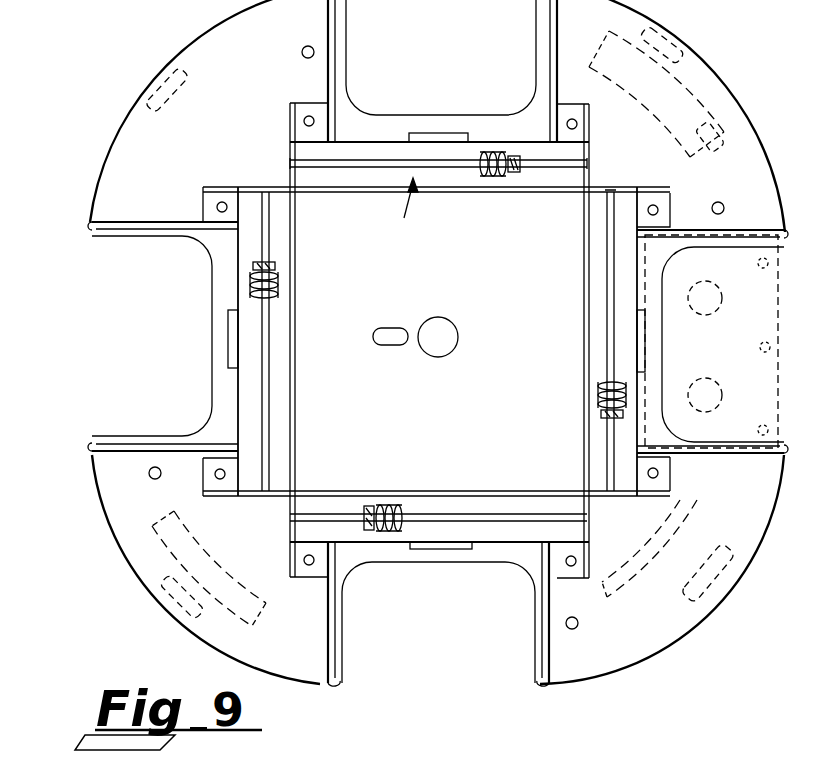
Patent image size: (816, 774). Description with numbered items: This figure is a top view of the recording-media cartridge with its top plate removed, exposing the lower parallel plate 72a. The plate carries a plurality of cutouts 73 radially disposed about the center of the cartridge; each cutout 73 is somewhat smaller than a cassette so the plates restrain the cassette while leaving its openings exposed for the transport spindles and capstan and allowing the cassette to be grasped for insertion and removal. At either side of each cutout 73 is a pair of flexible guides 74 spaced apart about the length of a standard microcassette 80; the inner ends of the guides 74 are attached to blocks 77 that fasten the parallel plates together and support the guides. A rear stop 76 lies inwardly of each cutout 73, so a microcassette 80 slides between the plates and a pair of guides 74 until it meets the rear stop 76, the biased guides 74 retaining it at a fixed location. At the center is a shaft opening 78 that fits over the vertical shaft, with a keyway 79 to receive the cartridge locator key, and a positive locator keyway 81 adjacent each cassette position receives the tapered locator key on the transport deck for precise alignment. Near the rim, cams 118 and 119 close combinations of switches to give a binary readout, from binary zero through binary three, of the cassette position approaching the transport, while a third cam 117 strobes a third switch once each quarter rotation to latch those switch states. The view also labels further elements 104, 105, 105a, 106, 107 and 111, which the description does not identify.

The lower parallel plate 72a is at (693, 65).
The cutout 73 is at (343, 23).
The flexible guide 74 is at (334, 55).
The rear stop 76 is at (440, 132).
The block 77 is at (304, 107).
The shaft opening 78 is at (447, 330).
The keyway 79 is at (394, 329).
The microcassette 80 is at (742, 262).
The positive locator keyway 81 is at (303, 47).
The compression spring 104 is at (500, 173).
The guide rod 105 is at (355, 166).
The guide rod end 105a is at (292, 163).
The frame strip 106 is at (475, 190).
The collar 107 is at (522, 168).
The direction arrow 111 is at (399, 208).
The third cam 117 is at (163, 82).
The cam 118 is at (741, 87).
The cam 119 is at (718, 140).